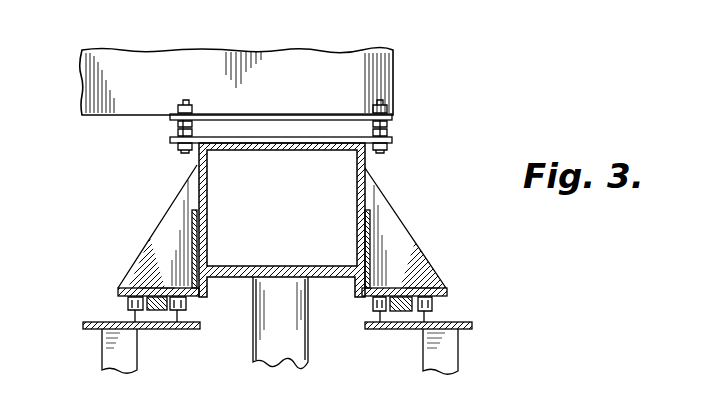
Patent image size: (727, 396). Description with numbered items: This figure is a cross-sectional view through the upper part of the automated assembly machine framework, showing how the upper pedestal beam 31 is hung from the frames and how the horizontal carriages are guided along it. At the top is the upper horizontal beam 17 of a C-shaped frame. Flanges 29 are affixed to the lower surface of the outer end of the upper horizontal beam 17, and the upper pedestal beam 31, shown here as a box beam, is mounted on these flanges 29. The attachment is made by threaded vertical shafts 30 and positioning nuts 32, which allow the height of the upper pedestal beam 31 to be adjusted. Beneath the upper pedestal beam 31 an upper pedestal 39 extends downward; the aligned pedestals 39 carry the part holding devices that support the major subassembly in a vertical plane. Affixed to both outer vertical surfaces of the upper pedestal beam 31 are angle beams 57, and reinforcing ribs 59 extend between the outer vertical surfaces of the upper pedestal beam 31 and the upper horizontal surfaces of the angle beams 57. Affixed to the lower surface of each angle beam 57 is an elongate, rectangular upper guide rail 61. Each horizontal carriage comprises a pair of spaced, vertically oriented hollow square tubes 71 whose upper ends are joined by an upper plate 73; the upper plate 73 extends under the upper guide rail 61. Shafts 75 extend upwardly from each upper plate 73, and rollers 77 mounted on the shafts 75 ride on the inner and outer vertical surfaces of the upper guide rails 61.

The upper horizontal beam 17 is at (150, 55).
The flange 29 is at (353, 113).
The threaded vertical shaft 30 is at (172, 150).
The positioning nut 32 is at (135, 127).
The upper pedestal beam 31 is at (243, 280).
The pedestal 39 is at (308, 340).
The reinforcing rib 59 is at (180, 208).
The angle beam 57 is at (118, 288).
The upper guide rail 61 is at (165, 287).
The shaft 75 is at (188, 309).
The roller 77 is at (127, 304).
The upper plate 73 is at (472, 328).
The hollow square tube 71 is at (112, 350).